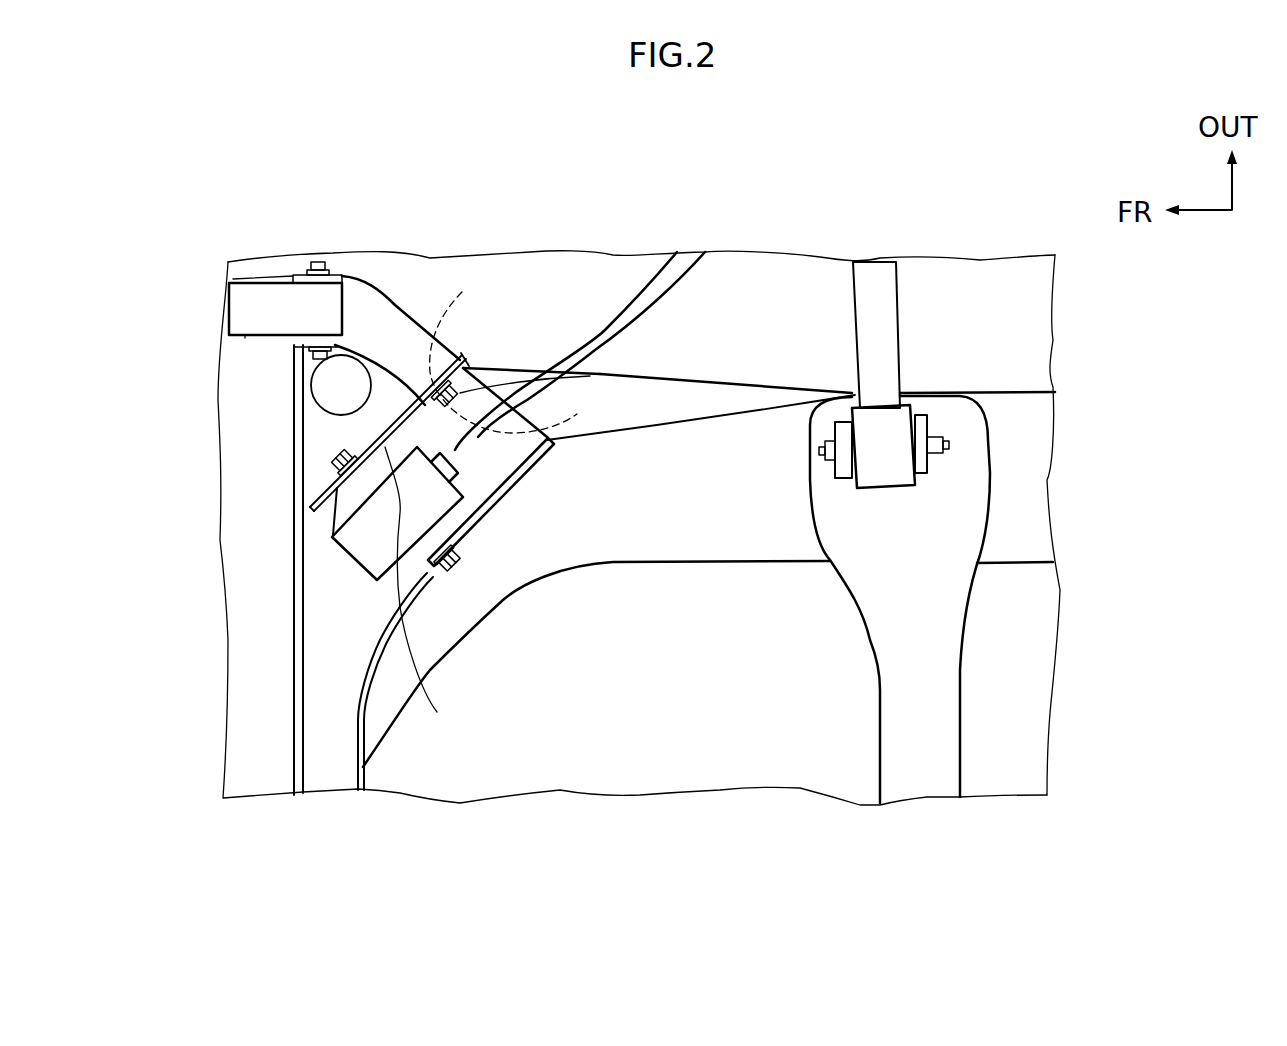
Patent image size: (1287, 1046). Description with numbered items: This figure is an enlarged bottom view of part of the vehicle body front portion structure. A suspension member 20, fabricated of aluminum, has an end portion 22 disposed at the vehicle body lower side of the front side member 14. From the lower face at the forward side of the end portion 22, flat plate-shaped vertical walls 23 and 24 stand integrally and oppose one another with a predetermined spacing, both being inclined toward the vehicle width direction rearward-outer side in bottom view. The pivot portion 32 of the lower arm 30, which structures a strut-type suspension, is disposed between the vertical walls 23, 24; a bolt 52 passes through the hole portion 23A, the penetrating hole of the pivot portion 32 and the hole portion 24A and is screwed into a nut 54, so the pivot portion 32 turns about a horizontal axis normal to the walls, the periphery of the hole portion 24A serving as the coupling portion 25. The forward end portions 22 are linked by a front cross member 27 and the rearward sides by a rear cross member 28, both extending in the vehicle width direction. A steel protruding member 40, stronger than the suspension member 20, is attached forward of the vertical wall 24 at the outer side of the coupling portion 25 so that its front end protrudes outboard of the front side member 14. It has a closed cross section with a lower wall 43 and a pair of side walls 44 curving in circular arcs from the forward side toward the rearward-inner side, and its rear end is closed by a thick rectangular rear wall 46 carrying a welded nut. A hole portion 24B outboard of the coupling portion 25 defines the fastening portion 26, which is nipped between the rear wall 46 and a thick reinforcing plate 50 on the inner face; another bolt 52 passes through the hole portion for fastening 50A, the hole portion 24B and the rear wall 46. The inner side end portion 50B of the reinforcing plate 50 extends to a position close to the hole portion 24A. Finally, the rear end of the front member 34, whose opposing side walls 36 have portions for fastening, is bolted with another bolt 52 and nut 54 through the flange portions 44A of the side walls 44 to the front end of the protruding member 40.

The front side member 14 is at (1012, 550).
The suspension member 20 is at (284, 698).
The end portion 22 is at (763, 545).
The vertical wall 23 is at (482, 518).
The hole portion 23A is at (455, 568).
The vertical wall 24 is at (310, 432).
The hole portion 24A is at (352, 480).
The hole portion 24B is at (503, 350).
The coupling portion 25 is at (305, 497).
The fastening portion 26 is at (415, 380).
The front cross member 27 is at (327, 766).
The rear cross member 28 is at (915, 775).
The lower arm 30 is at (598, 340).
The pivot portion 32 is at (353, 548).
The front member 34 is at (243, 303).
The side wall 36 is at (228, 261).
The protruding member 40 is at (392, 288).
The lower wall 43 is at (360, 300).
The side wall 44 is at (445, 386).
The flange portion 44A is at (283, 278).
The rear wall 46 is at (473, 368).
The reinforcing plate 50 is at (548, 447).
The hole portion for fastening 50A is at (538, 427).
The inner side end portion 50B is at (433, 595).
The bolt 52 is at (313, 260).
The nut 54 is at (318, 354).